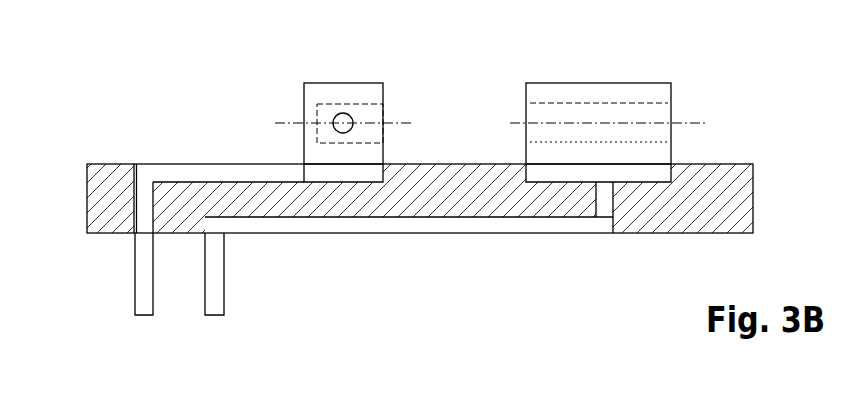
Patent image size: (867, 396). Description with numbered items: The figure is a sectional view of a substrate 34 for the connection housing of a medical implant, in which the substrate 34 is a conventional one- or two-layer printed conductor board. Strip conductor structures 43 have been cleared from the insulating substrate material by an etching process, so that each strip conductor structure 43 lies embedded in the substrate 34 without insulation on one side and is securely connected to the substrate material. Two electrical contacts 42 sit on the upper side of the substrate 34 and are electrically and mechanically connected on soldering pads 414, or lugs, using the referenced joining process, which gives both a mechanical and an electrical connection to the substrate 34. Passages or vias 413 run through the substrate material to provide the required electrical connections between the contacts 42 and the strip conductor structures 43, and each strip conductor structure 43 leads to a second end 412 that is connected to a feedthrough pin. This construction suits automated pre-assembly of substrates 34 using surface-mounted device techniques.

The substrate 34 is at (725, 222).
The electrical contact 42 is at (343, 82).
The strip conductor structure 43 is at (195, 170).
The second end 412 is at (145, 307).
The passage (via) 413 is at (145, 205).
The soldering pad 414 is at (363, 172).